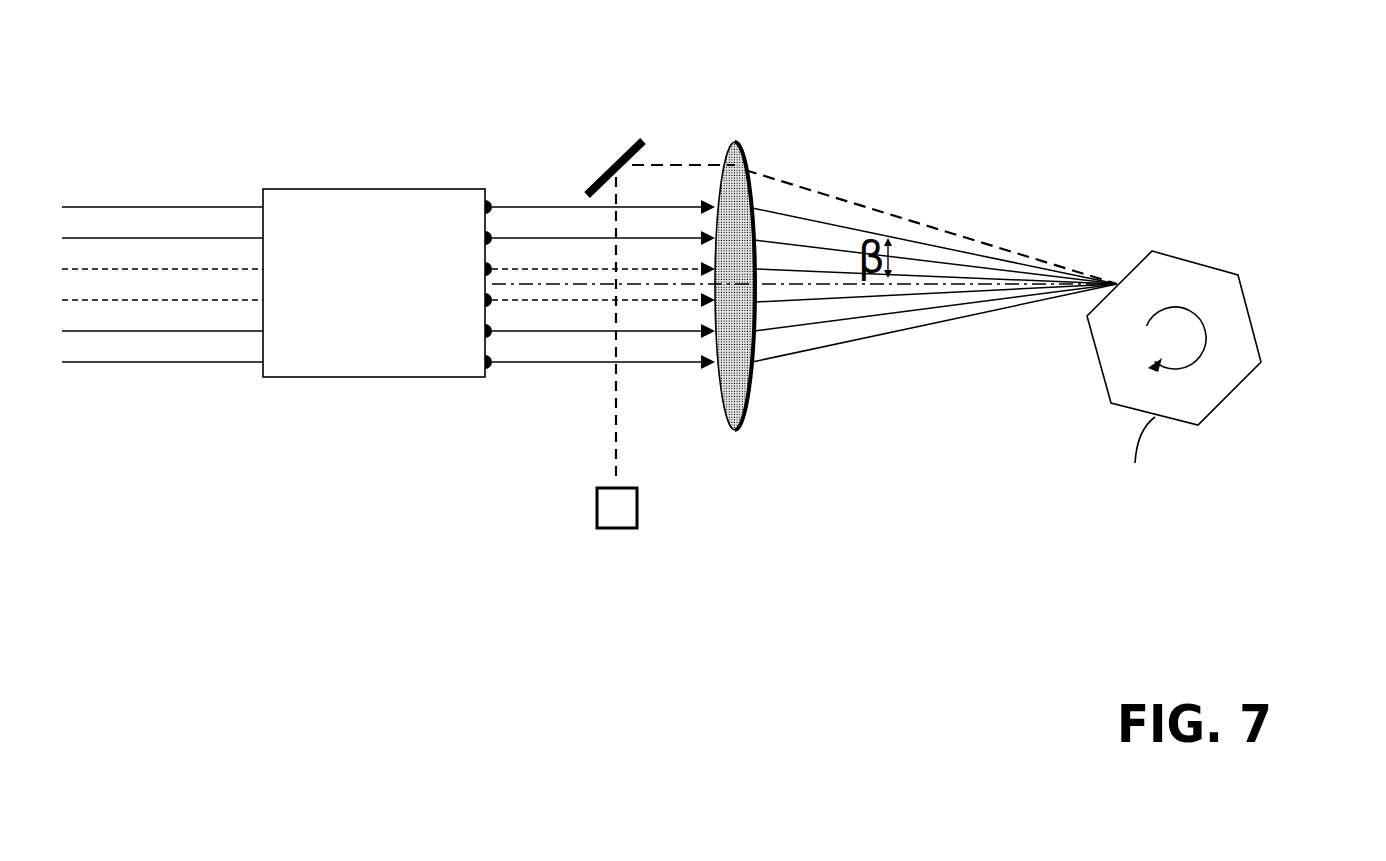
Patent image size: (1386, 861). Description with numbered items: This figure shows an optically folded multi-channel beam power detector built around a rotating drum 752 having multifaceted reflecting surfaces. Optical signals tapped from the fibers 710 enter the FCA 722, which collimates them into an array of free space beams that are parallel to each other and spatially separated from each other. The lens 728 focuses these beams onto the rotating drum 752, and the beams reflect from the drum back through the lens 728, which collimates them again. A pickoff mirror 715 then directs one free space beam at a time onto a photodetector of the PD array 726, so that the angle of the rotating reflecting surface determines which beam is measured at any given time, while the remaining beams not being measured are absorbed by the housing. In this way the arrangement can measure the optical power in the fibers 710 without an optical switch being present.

The fibers 710 is at (162, 261).
The FCA 722 is at (380, 378).
The pickoff mirror 715 is at (539, 300).
The lens 728 is at (742, 140).
The PD array 726 is at (648, 510).
The rotating drum 752 is at (1268, 330).